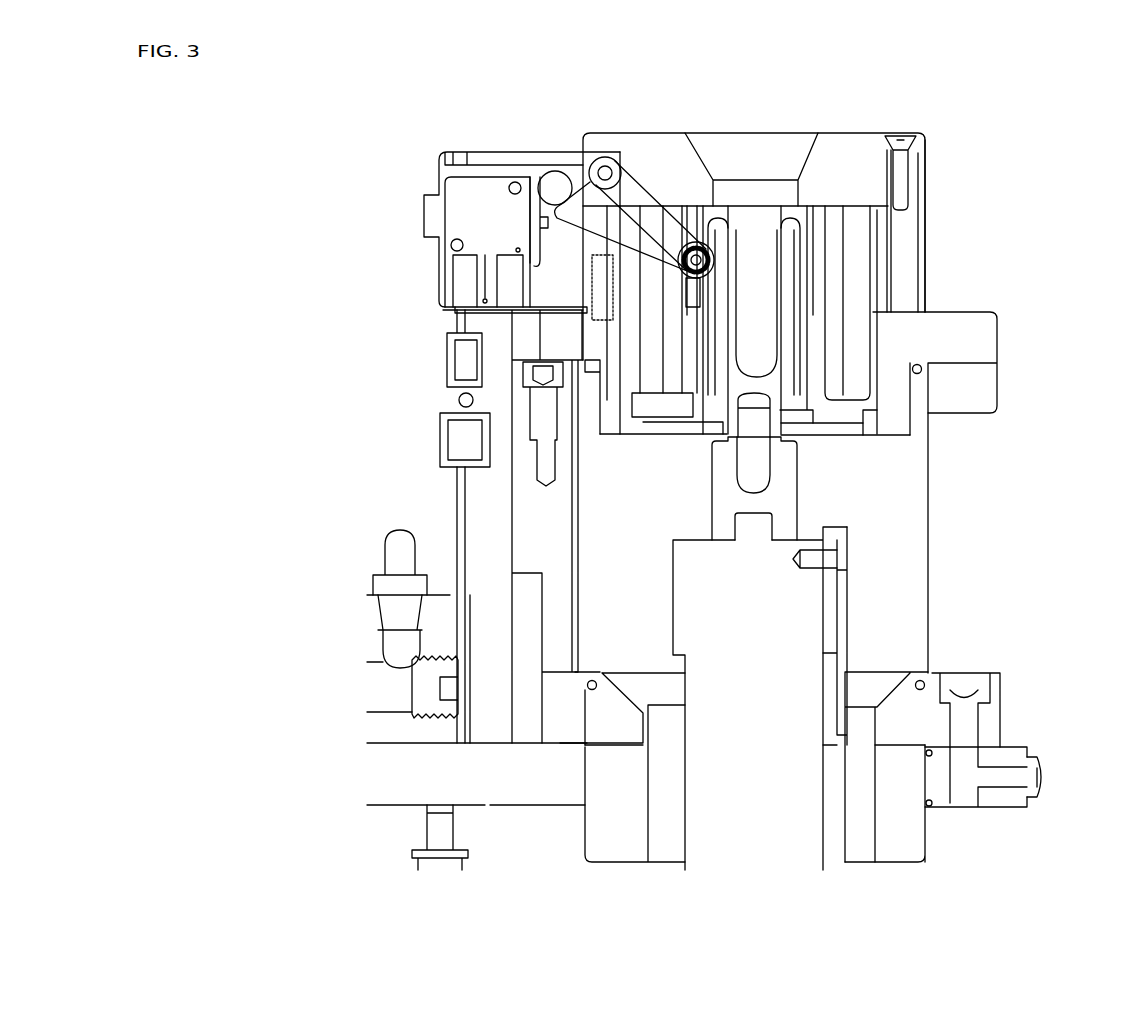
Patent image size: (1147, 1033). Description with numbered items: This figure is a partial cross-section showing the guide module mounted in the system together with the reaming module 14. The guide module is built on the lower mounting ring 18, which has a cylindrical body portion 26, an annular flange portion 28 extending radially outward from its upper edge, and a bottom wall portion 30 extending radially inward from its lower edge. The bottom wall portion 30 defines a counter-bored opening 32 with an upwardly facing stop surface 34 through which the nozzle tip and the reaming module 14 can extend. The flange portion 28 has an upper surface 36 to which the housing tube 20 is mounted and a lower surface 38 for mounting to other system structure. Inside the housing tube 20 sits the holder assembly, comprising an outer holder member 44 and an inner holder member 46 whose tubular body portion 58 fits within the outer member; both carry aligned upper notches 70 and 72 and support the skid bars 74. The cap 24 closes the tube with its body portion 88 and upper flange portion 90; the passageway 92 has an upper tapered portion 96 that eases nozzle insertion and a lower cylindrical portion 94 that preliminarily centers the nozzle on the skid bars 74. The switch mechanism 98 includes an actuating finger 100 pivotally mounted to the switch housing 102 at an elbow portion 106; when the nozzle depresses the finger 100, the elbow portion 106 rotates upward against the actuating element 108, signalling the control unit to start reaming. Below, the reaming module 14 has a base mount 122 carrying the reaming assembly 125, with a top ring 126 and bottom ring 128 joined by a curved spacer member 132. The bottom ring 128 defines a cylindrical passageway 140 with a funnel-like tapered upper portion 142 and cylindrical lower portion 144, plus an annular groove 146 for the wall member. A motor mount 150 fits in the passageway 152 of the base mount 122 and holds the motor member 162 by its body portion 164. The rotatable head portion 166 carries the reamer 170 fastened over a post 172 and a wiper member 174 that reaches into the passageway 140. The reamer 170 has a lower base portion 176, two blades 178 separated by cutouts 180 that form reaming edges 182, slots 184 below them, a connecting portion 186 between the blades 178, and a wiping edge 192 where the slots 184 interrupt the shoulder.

The reaming module 14 is at (1053, 752).
The lower mounting ring 18 is at (977, 328).
The housing tube 20 is at (925, 220).
The cap 24 is at (830, 183).
The cylindrical body portion 26 is at (850, 412).
The annular flange portion 28 is at (937, 338).
The bottom wall portion 30 is at (887, 407).
The opening 32 is at (823, 437).
The stop surface 34 is at (800, 418).
The upper surface 36 is at (937, 312).
The lower surface 38 is at (993, 365).
The outer holder member 44 is at (768, 378).
The inner holder member 46 is at (815, 252).
The tubular body portion 58 is at (895, 148).
The upper notch 70 is at (704, 242).
The upper notch 72 is at (667, 222).
The skid bars 74 is at (801, 222).
The body portion 88 is at (657, 180).
The upper flange portion 90 is at (610, 143).
The passageway 92 is at (778, 190).
The lower cylindrical portion 94 is at (738, 183).
The upper tapered portion 96 is at (746, 180).
The switch mechanism 98 is at (535, 118).
The actuating finger 100 is at (660, 247).
The switch housing 102 is at (456, 153).
The elbow portion 106 is at (598, 186).
The actuating element 108 is at (450, 156).
The base mount 122 is at (1007, 745).
The reaming assembly 125 is at (850, 732).
The top ring 126 is at (970, 390).
The bottom ring 128 is at (1000, 673).
The curved spacer member 132 is at (540, 555).
The cylindrical passageway 140 is at (858, 682).
The tapered upper portion 142 is at (885, 683).
The cylindrical lower portion 144 is at (867, 715).
The annular groove 146 is at (590, 692).
The motor mount 150 is at (925, 860).
The passageway 152 is at (927, 795).
The motor member 162 is at (740, 735).
The body portion 164 is at (857, 797).
The rotatable head portion 166 is at (747, 607).
The reamer 170 is at (723, 503).
The post 172 is at (760, 523).
The wiper member 174 is at (842, 593).
The lower base portion 176 is at (723, 510).
The blades 178 is at (733, 350).
The cutouts 180 is at (752, 342).
The reaming edges 182 is at (737, 307).
The slots 184 is at (752, 452).
The connecting portion 186 is at (858, 240).
The wiping edge 192 is at (770, 452).